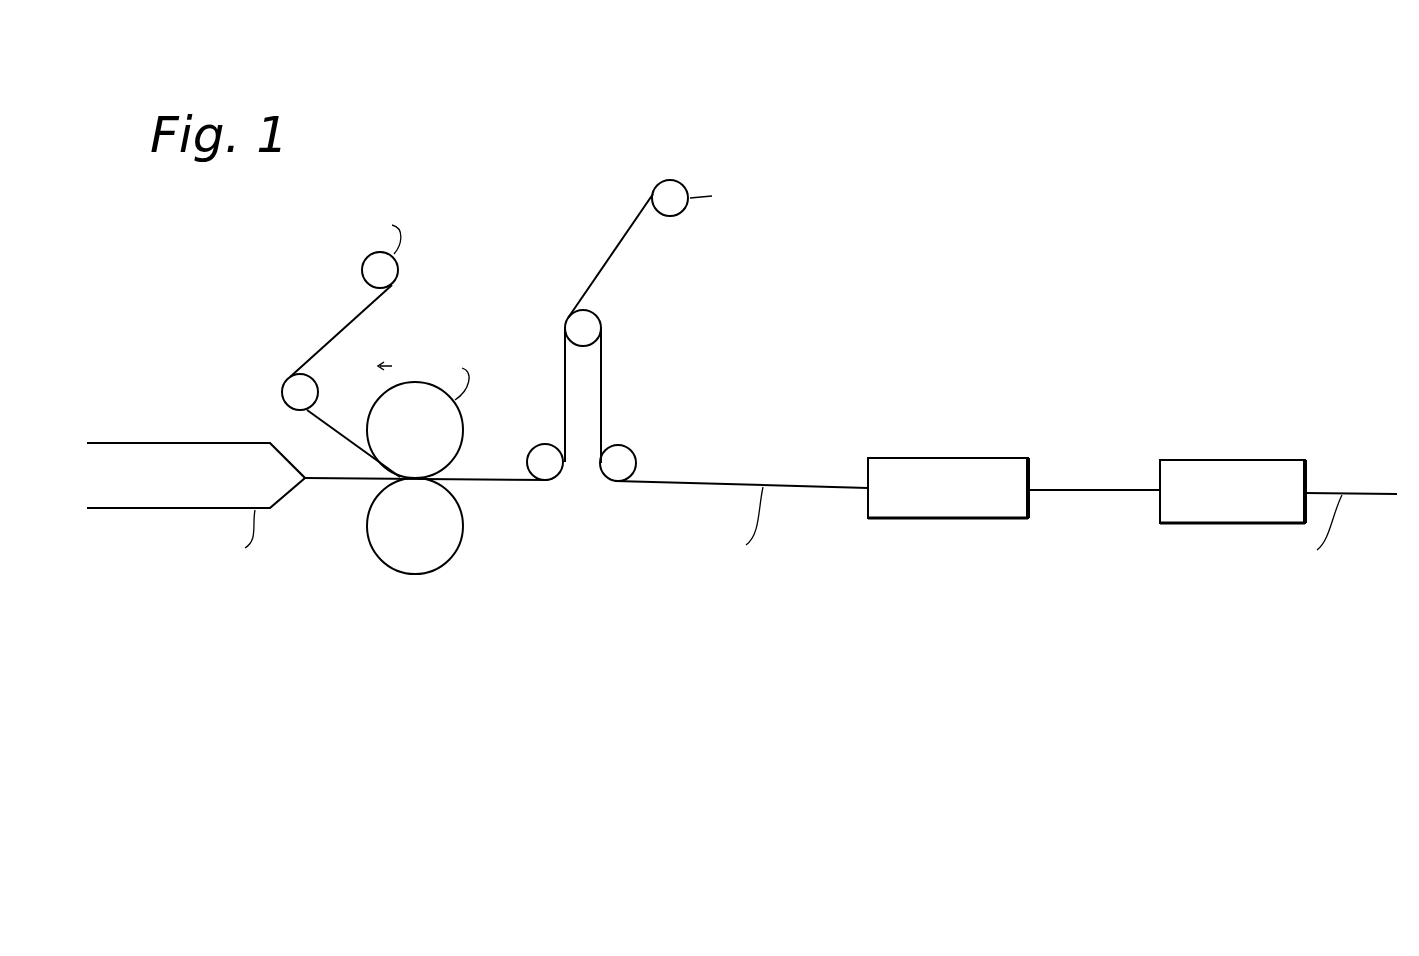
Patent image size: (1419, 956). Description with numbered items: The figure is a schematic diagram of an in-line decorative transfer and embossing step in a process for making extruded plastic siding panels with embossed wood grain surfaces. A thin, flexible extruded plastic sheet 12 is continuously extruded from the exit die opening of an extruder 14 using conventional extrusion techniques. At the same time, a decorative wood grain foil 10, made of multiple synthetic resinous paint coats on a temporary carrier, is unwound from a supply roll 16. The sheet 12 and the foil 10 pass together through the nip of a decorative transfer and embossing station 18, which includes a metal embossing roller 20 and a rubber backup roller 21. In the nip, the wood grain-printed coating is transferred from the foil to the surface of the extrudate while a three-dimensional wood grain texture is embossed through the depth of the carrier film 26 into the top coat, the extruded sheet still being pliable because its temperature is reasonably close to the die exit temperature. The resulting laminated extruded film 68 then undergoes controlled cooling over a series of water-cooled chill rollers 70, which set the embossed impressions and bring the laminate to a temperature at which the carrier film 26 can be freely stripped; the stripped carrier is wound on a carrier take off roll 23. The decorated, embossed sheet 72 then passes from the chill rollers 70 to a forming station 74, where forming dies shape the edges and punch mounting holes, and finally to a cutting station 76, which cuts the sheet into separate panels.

The decorative wood grain foil 10 is at (346, 327).
The extruded plastic sheet 12 is at (329, 481).
The extruder 14 is at (215, 443).
The supply roll 16 is at (399, 263).
The decorative transfer and embossing station 18 is at (482, 505).
The metal embossing roller 20 is at (455, 433).
The rubber backup roller 21 is at (440, 553).
The carrier take off roll 23 is at (671, 196).
The carrier film 26 is at (603, 262).
The laminated extruded film 68 is at (563, 365).
The chill rollers 70 is at (585, 330).
The decorated, embossed sheet 72 is at (683, 484).
The forming station 74 is at (945, 458).
The cutting station 76 is at (1203, 460).